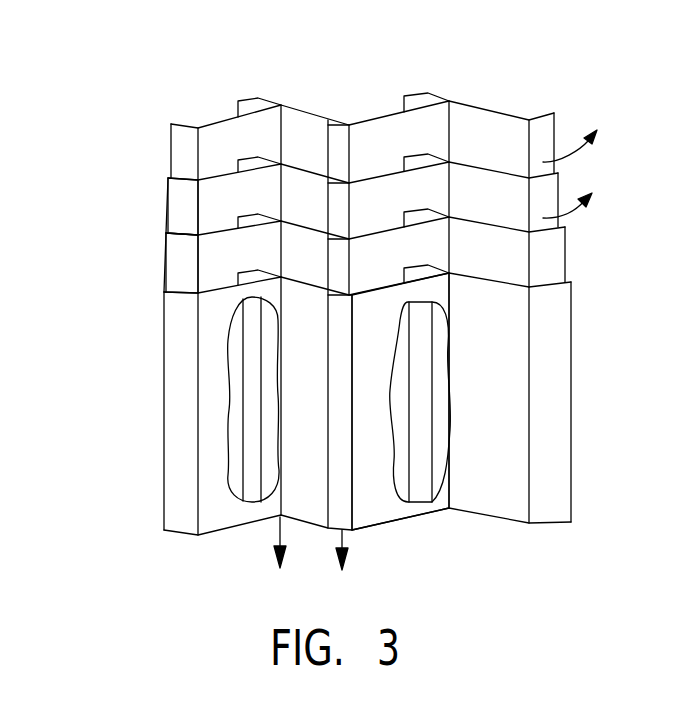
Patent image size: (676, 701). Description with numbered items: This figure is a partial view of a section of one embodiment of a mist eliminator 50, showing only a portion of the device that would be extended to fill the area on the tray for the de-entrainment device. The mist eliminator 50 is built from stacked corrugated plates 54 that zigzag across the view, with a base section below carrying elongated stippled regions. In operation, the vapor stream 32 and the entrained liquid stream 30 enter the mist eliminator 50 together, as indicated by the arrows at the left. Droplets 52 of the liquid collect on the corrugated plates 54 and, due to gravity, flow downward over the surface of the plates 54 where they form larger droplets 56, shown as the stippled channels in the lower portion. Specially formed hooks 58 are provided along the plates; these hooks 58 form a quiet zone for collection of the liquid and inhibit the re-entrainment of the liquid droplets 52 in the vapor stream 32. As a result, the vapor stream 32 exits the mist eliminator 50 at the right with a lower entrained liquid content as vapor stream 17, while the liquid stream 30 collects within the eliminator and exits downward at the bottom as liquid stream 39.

The vapor stream 17 is at (575, 157).
The entrained liquid stream 30 is at (170, 205).
The vapor stream 32 is at (172, 270).
The liquid stream 39 is at (283, 528).
The mist eliminator 50 is at (125, 401).
The droplets 52 is at (240, 138).
The corrugated plates 54 is at (338, 120).
The larger droplets 56 is at (253, 413).
The hooks 58 is at (420, 98).